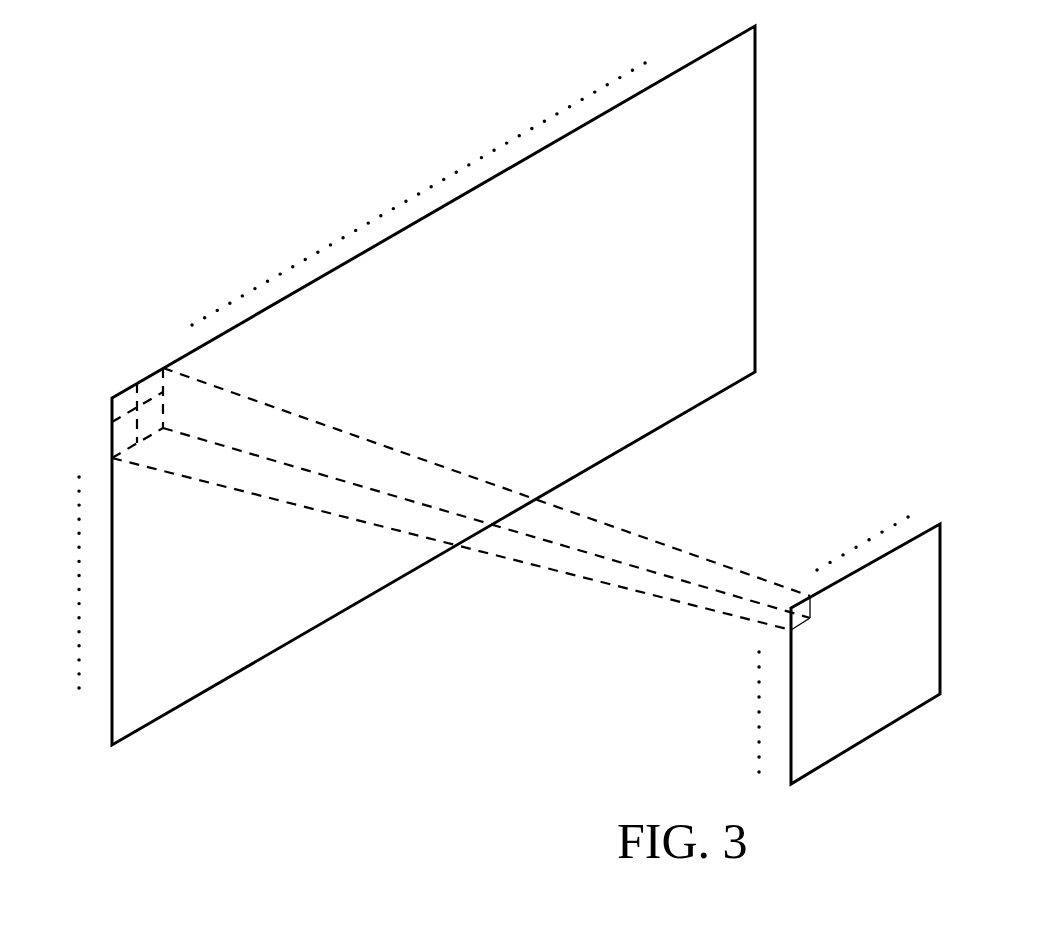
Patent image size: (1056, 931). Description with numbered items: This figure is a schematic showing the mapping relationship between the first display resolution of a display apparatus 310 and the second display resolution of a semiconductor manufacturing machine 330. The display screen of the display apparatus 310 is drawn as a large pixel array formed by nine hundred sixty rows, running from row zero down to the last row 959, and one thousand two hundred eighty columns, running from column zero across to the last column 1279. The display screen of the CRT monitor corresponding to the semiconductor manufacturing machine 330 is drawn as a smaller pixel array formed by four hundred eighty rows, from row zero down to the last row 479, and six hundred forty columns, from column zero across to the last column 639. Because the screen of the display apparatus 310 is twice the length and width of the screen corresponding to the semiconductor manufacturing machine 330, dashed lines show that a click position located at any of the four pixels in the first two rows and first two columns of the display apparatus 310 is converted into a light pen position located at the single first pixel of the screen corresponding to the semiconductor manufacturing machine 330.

The display apparatus 310 is at (442, 378).
The semiconductor manufacturing machine 330 is at (877, 640).
The last column C1279 of first pixel array 1279 is at (465, 168).
The last row R959 of first pixel array 959 is at (72, 610).
The last column C639 of second pixel array 639 is at (903, 527).
The last row R479 of second pixel array 479 is at (752, 724).